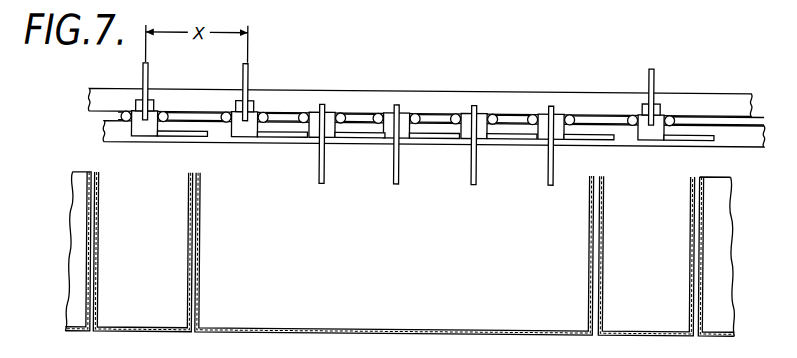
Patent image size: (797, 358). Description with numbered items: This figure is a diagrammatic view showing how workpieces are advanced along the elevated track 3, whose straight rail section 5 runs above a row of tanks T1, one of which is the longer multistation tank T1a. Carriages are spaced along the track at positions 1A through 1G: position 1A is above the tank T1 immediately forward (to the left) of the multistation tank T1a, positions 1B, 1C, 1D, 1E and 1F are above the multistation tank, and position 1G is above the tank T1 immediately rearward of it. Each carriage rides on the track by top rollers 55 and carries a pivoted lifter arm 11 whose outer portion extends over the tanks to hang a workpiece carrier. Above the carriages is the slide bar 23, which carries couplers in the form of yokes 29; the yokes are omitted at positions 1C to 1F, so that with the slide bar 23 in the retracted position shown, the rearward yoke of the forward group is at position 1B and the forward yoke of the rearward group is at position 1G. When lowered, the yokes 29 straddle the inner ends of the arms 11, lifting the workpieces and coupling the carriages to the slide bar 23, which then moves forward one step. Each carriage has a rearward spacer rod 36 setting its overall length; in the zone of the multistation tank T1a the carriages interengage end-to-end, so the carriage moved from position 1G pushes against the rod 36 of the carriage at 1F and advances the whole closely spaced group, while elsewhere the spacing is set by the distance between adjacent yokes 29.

The track 3 is at (93, 133).
The straight rail section 5 is at (118, 138).
The slide bar 23 is at (107, 99).
The arm 11 is at (241, 69).
The yoke 29 is at (155, 107).
The top roller 55 is at (306, 114).
The spacer rod 36 is at (180, 138).
The carriage position 1A is at (138, 136).
The carriage position 1B is at (238, 137).
The carriage position 1C is at (313, 138).
The carriage position 1D is at (389, 138).
The carriage position 1E is at (464, 138).
The carriage position 1F is at (541, 138).
The carriage position 1G is at (646, 138).
The tank T1 is at (87, 266).
The multistation tank T1a is at (594, 280).